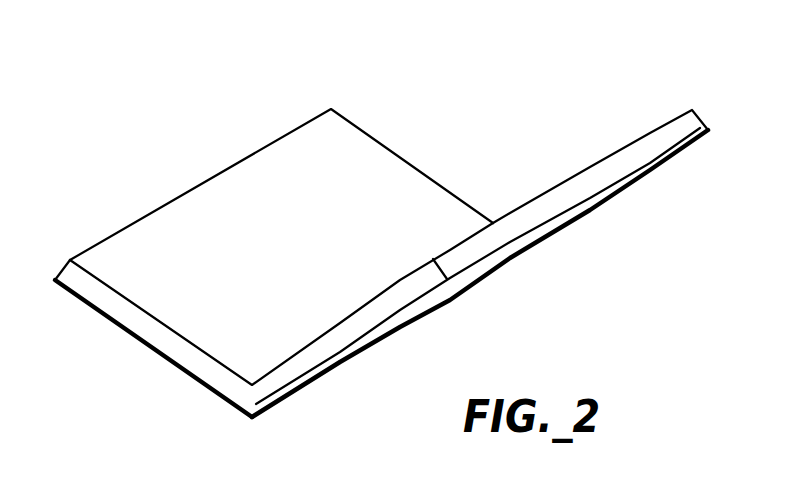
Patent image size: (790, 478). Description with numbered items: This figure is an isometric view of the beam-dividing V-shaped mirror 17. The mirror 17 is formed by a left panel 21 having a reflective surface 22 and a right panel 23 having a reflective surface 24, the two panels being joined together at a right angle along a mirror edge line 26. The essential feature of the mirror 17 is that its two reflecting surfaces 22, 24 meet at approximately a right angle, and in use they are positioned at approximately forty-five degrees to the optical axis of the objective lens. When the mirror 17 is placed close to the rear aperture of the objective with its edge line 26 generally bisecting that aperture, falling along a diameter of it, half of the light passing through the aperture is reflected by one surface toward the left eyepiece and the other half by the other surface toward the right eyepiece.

The V-shaped mirror 17 is at (498, 104).
The left panel 21 is at (212, 178).
The reflective surface 22 is at (133, 335).
The right panel 23 is at (660, 128).
The reflective surface 24 is at (552, 228).
The mirror edge line 26 is at (252, 417).